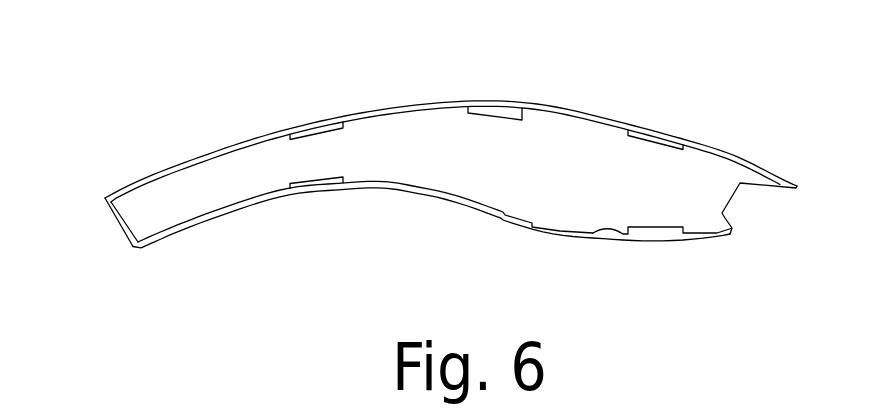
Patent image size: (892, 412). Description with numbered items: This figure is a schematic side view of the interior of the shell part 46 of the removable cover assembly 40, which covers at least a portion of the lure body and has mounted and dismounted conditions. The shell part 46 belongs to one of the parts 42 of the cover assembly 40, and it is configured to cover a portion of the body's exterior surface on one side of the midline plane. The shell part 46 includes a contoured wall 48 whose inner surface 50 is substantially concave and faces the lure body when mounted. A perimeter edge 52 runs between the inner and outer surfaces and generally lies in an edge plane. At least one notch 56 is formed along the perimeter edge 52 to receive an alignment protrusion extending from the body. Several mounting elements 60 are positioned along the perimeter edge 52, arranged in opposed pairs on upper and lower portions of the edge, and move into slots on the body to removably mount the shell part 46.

The removable cover assembly 40 is at (457, 174).
The part 42 is at (360, 145).
The shell part 46 is at (580, 115).
The contoured wall 48 is at (723, 150).
The inner surface 50 is at (445, 160).
The perimeter edge 52 is at (188, 162).
The notch 56 is at (607, 238).
The mounting element 60 is at (312, 128).